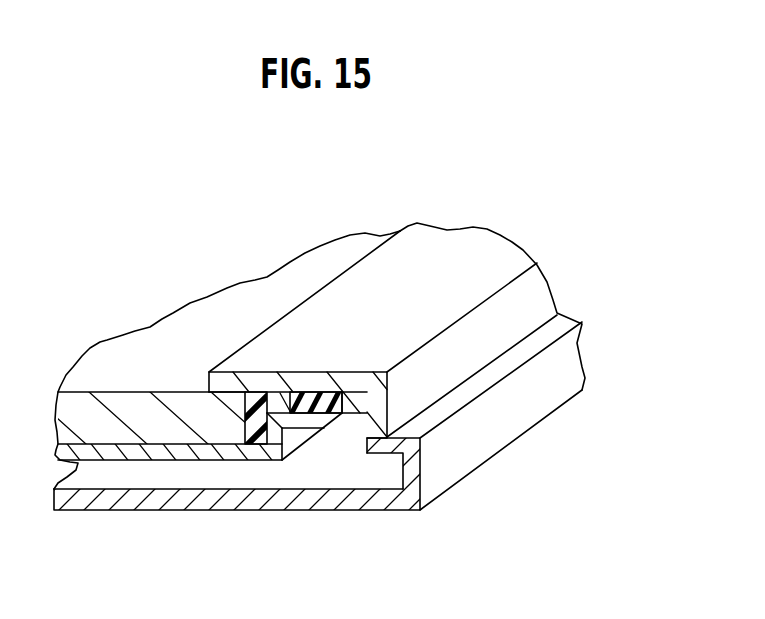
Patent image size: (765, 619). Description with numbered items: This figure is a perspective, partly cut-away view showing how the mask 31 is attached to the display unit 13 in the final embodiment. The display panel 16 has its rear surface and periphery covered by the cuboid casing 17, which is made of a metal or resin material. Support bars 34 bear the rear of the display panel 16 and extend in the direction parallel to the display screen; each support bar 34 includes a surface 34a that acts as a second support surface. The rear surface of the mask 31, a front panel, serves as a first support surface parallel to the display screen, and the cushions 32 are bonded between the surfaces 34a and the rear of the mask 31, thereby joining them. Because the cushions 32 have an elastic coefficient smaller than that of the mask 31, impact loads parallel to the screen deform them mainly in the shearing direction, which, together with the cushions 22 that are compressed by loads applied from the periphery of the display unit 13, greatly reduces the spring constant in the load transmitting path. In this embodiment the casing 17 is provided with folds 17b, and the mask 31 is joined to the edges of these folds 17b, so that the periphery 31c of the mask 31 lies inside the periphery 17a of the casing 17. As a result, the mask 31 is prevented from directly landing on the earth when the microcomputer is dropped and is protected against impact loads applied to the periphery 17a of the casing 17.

The display unit 13 is at (408, 202).
The display panel 16 is at (148, 333).
The casing 17 is at (329, 511).
The periphery of the casing 17a is at (460, 427).
The folds of the casing 17b is at (395, 453).
The cushions 22 is at (247, 418).
The mask 31 is at (480, 253).
The periphery of the mask 31c is at (533, 290).
The cushions 32 is at (350, 399).
The support bars 34 is at (150, 462).
The surface of the support bar 34a is at (282, 410).